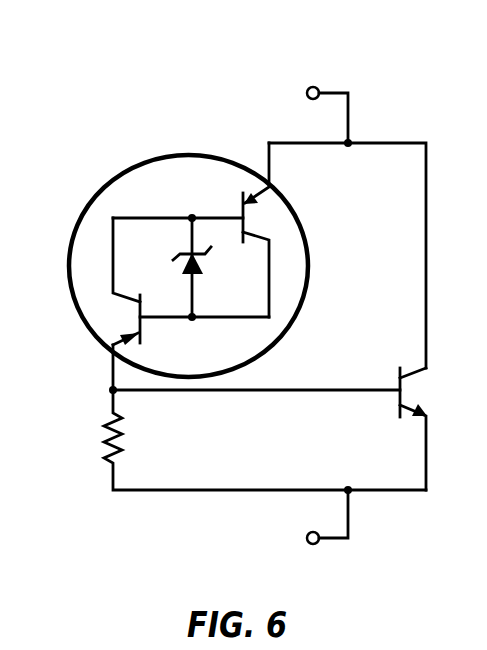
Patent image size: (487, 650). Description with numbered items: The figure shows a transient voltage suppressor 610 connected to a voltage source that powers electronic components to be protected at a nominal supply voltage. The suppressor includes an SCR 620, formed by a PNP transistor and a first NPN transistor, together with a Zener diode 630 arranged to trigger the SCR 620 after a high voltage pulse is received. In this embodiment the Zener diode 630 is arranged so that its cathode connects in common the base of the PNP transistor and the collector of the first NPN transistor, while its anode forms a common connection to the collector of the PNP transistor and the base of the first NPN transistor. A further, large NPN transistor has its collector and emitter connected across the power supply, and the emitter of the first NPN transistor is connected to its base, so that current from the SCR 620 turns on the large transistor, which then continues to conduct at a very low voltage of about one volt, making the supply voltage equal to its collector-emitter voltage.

The transient voltage suppressor 610 is at (146, 91).
The SCR 620 is at (109, 186).
The Zener diode 630 is at (198, 274).